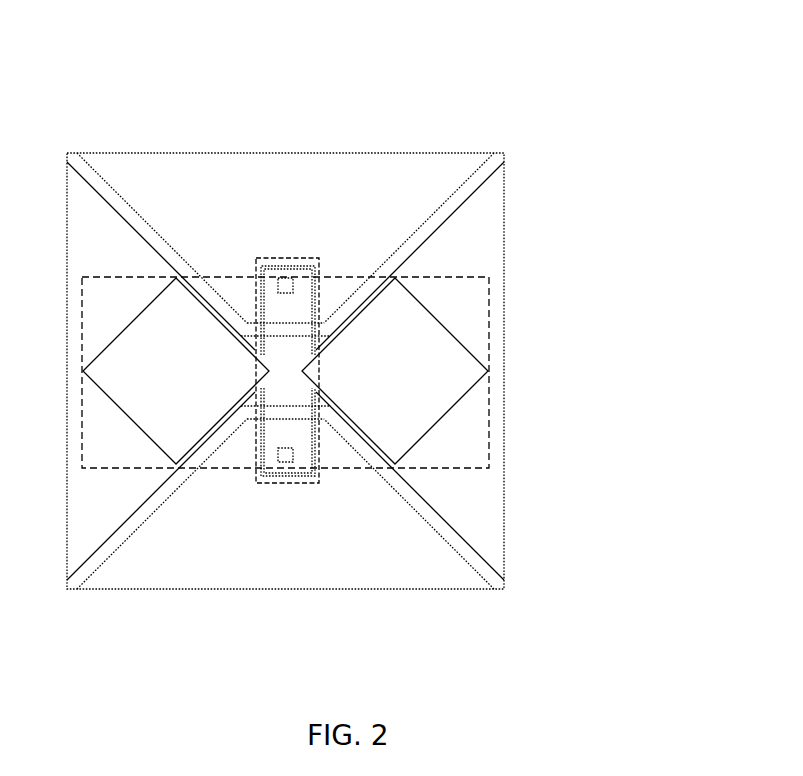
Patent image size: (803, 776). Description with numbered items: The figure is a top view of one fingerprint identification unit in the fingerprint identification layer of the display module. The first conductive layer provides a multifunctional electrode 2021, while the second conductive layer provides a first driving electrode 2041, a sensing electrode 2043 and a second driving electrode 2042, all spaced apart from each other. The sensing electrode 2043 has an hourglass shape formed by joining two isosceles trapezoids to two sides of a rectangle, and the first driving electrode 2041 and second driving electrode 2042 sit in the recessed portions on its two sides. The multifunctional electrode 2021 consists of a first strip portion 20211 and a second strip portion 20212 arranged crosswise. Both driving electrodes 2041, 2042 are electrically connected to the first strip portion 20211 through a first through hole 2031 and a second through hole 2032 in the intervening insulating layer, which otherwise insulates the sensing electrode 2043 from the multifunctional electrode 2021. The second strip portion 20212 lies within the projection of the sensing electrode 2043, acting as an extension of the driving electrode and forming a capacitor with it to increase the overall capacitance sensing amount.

The multifunctional electrode 2021 is at (320, 72).
The first strip portion 20211 is at (287, 257).
The second strip portion 20212 is at (213, 274).
The first through hole 2031 is at (282, 292).
The second through hole 2032 is at (286, 458).
The first driving electrode 2041 is at (433, 192).
The second driving electrode 2042 is at (433, 565).
The sensing electrode 2043 is at (433, 267).